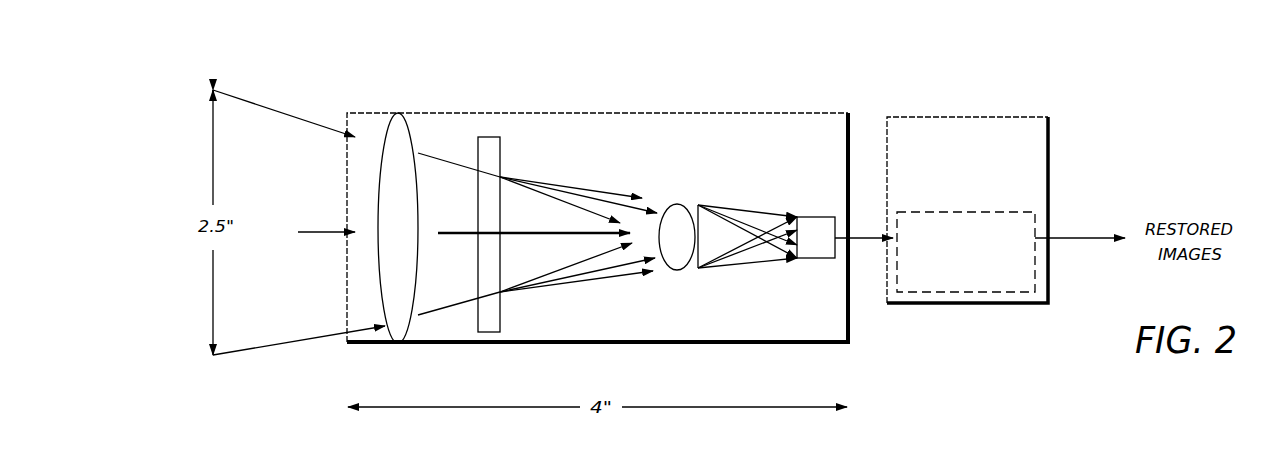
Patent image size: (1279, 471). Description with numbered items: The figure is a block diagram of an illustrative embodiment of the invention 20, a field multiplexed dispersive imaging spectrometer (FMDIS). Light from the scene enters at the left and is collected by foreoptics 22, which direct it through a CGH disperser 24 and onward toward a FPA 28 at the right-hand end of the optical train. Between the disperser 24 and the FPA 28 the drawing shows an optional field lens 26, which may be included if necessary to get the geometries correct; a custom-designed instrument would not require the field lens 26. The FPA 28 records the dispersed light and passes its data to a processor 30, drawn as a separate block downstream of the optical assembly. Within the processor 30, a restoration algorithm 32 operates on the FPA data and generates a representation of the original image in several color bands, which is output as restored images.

The field multiplexed dispersive imaging spectrometer 20 is at (298, 84).
The foreoptics 22 is at (400, 118).
The CGH disperser 24 is at (488, 135).
The field lens 26 is at (677, 202).
The FPA 28 is at (820, 216).
The processor 30 is at (968, 114).
The restoration algorithm 32 is at (963, 292).